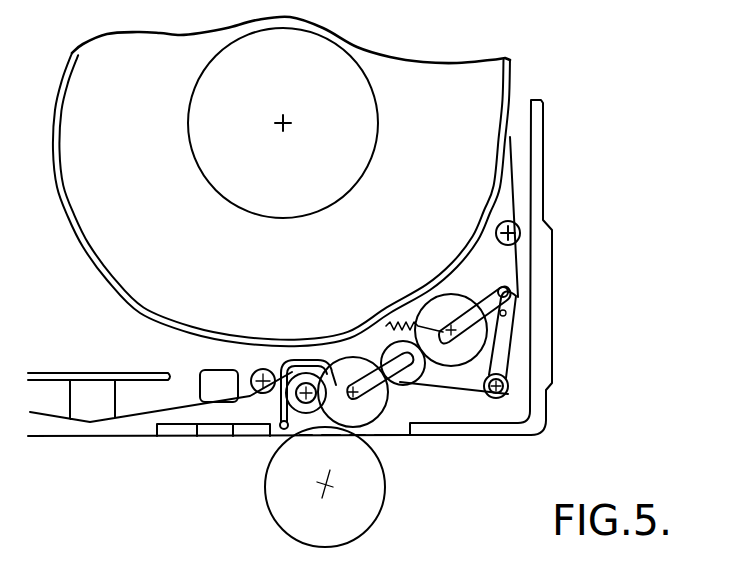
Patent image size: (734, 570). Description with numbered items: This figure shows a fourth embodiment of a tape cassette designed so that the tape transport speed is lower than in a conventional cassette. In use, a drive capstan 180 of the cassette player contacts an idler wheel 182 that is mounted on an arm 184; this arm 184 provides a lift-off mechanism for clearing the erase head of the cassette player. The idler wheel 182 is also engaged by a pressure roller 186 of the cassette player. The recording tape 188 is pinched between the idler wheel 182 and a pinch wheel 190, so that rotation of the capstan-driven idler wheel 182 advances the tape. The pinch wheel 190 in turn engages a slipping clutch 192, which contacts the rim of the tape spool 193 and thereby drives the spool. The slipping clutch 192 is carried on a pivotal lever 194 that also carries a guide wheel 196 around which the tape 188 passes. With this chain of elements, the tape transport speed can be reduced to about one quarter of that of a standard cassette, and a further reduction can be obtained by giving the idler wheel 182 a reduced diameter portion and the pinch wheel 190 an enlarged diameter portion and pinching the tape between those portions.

The drive capstan 180 is at (293, 384).
The idler wheel 182 is at (362, 410).
The arm 184 is at (285, 405).
The pressure roller 186 is at (292, 511).
The recording tape 188 is at (133, 417).
The pinch wheel 190 is at (417, 372).
The slipping clutch 192 is at (443, 308).
The tape spool 193 is at (510, 203).
The pivotal lever 194 is at (502, 335).
The guide wheel 196 is at (508, 394).